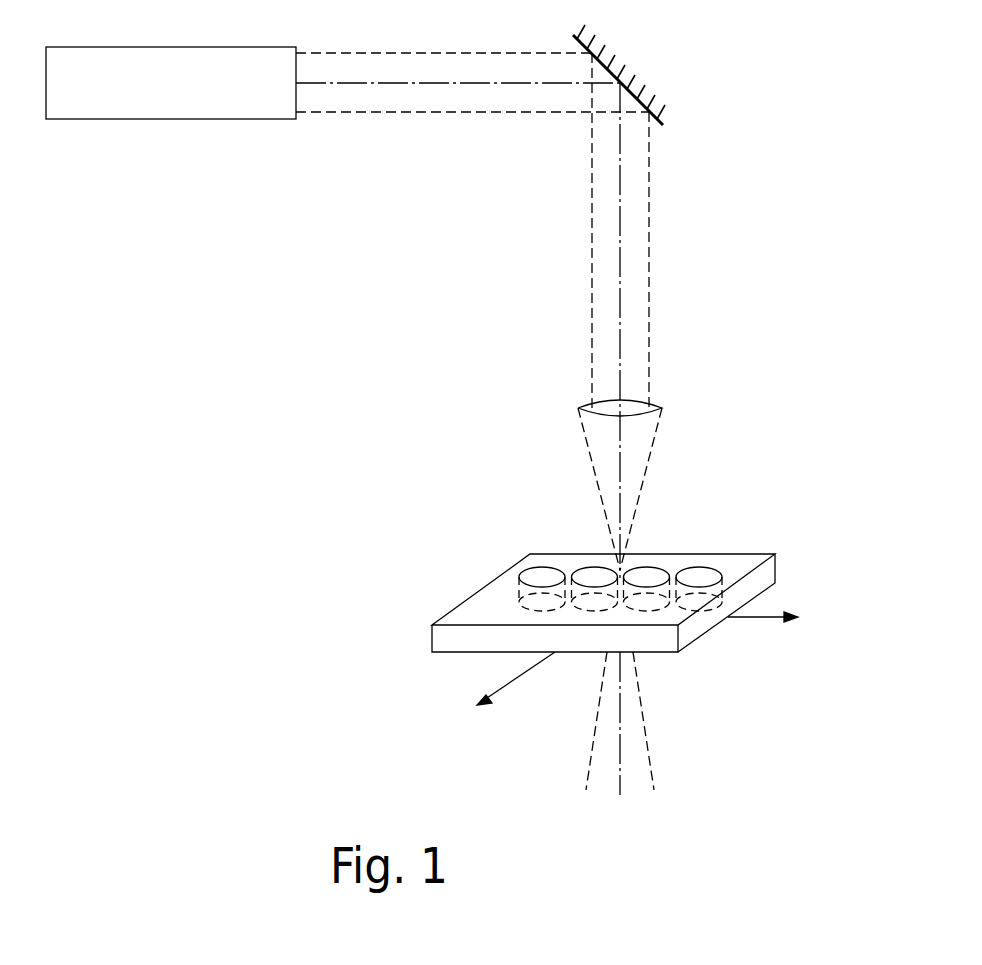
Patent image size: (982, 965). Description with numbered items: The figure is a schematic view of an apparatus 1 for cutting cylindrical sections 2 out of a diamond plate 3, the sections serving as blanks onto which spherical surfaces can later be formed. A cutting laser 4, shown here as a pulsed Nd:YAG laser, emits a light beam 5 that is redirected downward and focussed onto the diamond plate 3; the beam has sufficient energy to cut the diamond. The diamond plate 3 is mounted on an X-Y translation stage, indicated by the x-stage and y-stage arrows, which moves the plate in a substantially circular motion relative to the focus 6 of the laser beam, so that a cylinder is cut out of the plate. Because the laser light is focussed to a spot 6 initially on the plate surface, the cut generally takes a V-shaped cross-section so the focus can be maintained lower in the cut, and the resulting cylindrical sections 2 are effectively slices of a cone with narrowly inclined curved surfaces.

The apparatus 1 is at (323, 425).
The cylindrical sections 2 is at (543, 580).
The diamond plate 3 is at (432, 637).
The cutting laser 4 is at (117, 119).
The light beam 5 is at (483, 72).
The focus 6 is at (625, 568).